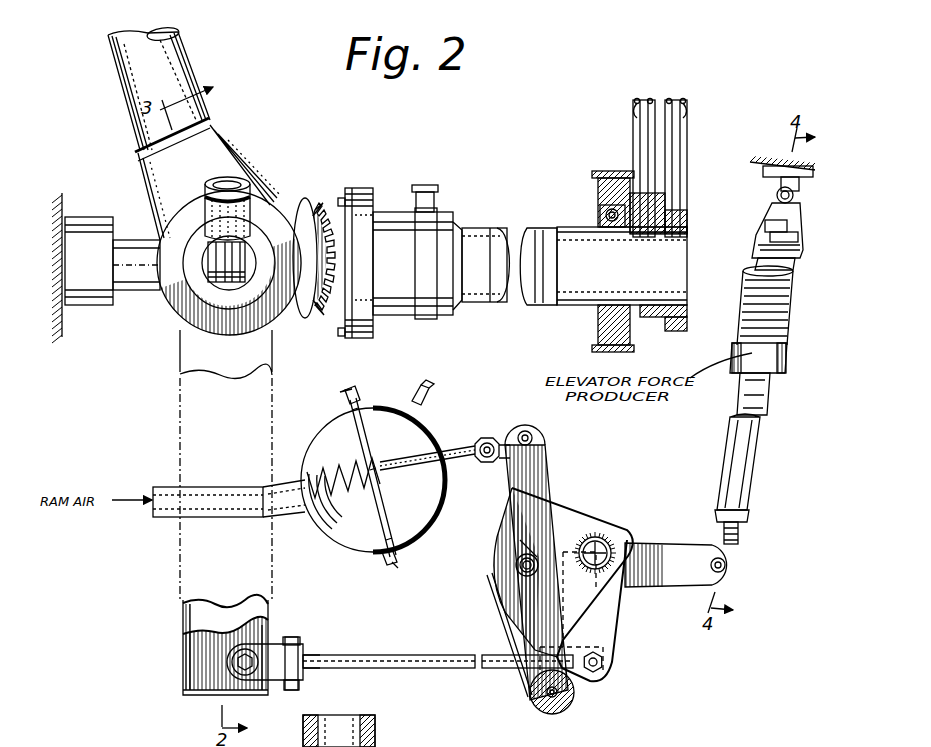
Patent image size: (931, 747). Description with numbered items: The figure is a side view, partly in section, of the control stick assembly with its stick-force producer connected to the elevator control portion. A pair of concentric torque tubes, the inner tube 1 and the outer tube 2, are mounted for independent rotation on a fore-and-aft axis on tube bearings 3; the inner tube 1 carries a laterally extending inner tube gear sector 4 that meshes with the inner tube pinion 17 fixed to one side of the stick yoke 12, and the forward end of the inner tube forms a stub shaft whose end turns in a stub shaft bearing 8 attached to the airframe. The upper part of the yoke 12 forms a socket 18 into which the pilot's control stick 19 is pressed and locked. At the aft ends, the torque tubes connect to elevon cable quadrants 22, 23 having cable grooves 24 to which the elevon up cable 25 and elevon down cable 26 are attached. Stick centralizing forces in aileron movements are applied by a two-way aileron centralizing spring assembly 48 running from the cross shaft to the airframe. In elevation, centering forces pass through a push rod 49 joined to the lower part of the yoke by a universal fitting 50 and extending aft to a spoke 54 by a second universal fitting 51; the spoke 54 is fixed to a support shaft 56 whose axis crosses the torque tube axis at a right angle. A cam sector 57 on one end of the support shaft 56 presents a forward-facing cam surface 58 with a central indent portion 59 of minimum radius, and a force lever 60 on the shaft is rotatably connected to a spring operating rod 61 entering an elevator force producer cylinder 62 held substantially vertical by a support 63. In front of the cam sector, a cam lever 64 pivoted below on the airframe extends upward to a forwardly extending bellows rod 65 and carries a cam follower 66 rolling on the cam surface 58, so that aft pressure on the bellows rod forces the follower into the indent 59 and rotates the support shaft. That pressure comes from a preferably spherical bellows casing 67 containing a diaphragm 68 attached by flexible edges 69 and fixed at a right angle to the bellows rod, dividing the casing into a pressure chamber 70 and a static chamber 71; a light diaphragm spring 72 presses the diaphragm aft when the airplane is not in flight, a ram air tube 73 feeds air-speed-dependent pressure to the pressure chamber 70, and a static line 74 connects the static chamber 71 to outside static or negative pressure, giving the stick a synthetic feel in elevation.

The inner tube 1 is at (538, 243).
The outer tube 2 is at (472, 245).
The tube bearings 3 is at (600, 218).
The inner tube gear sector 4 is at (345, 330).
The stub shaft bearing 8 is at (82, 238).
The stick yoke 12 is at (257, 212).
The inner tube pinion 17 is at (316, 318).
The socket 18 is at (190, 152).
The pilot's control stick 19 is at (138, 73).
The elevon cable quadrant 22 is at (687, 141).
The elevon cable quadrant 23 is at (633, 141).
The cable grooves 24 is at (636, 105).
The elevon up cable 25 is at (637, 100).
The elevon down cable 26 is at (650, 100).
The aileron centralizing spring assembly 48 is at (230, 180).
The push rod 49 is at (374, 660).
The universal fitting 50 is at (271, 680).
The second universal fitting 51 is at (590, 680).
The spoke 54 is at (598, 633).
The support shaft 56 is at (605, 548).
The cam sector 57 is at (530, 505).
The cam surface 58 is at (520, 545).
The central indent portion 59 is at (595, 540).
The force lever 60 is at (675, 563).
The spring operating rod 61 is at (740, 430).
The elevator force producer cylinder 62 is at (752, 284).
The support 63 is at (770, 183).
The cam lever 64 is at (530, 681).
The bellows rod 65 is at (455, 452).
The cam follower 66 is at (515, 570).
The bellows casing 67 is at (336, 540).
The diaphragm 68 is at (378, 449).
The flexible edges 69 is at (362, 412).
The pressure chamber 70 is at (366, 546).
The static chamber 71 is at (410, 525).
The diaphragm spring 72 is at (326, 520).
The ram air tube 73 is at (160, 512).
The static line 74 is at (431, 398).